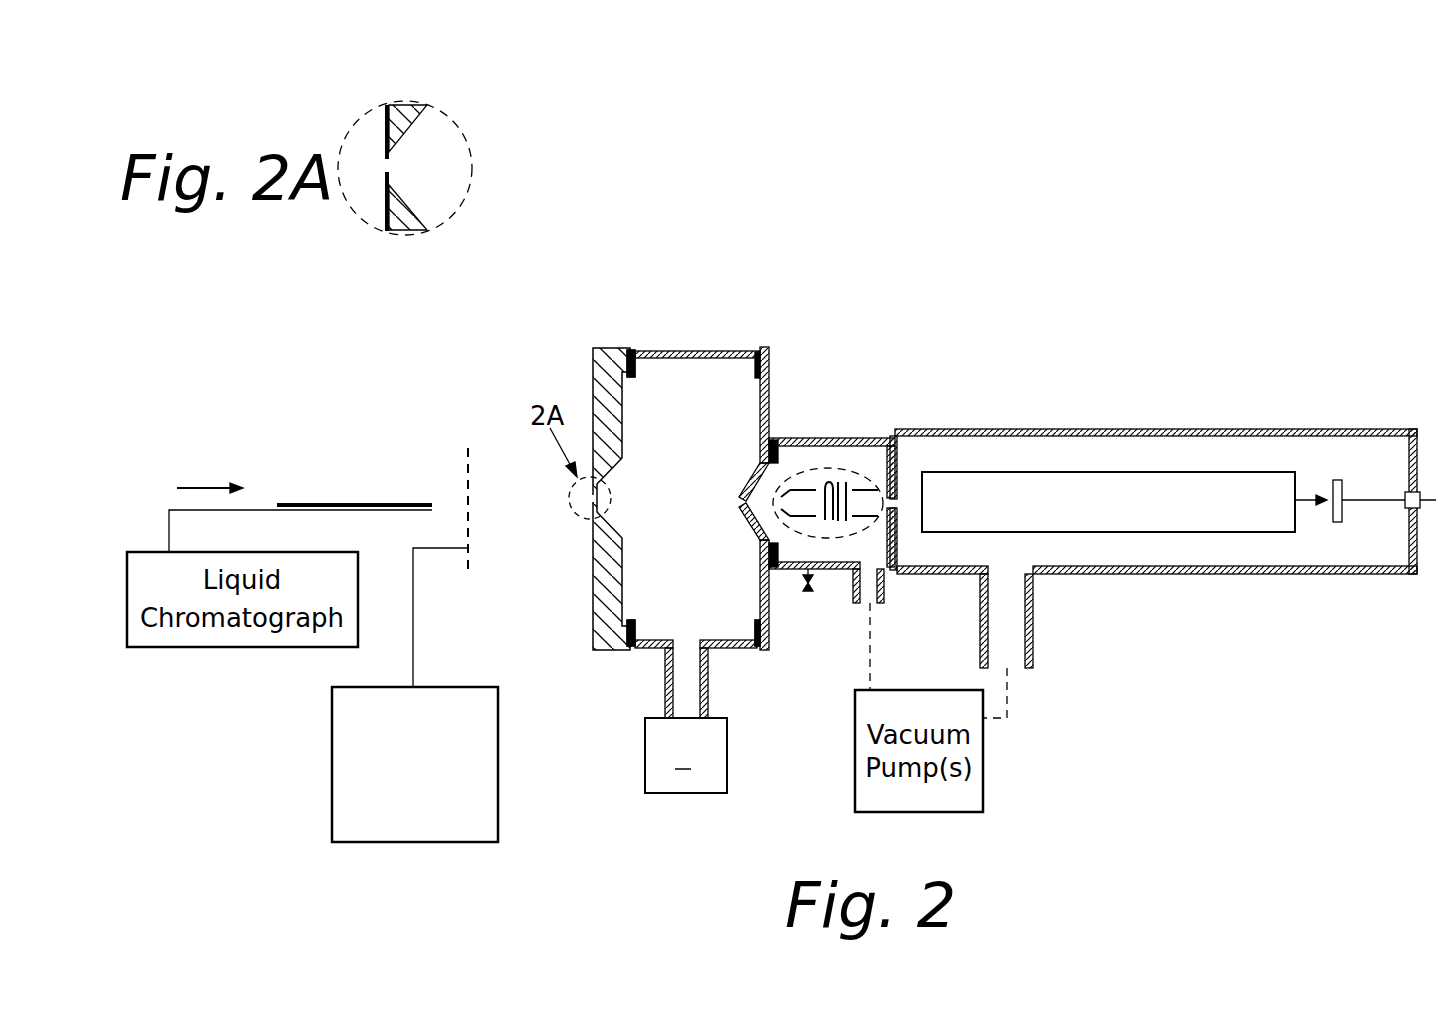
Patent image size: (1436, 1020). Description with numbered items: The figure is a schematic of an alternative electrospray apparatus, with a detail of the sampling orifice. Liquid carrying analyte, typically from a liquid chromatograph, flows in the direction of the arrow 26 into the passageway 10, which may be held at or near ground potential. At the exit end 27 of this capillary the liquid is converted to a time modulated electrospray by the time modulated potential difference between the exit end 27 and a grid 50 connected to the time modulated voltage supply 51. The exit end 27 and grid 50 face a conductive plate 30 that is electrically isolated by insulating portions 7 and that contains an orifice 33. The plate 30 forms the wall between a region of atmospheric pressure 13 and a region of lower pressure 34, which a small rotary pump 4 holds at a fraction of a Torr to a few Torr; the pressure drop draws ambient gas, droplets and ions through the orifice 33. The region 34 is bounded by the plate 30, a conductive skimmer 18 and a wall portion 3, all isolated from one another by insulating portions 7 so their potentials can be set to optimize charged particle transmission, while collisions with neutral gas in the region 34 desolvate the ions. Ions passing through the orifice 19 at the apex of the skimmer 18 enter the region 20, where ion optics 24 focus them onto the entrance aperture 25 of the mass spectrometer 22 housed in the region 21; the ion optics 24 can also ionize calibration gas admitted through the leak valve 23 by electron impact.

In FIG. 2, the wall portion 3 is at (672, 352).
In FIG. 2, the small rotary pump 4 is at (686, 755).
In FIG. 2, the insulating portions 7 is at (632, 650).
In FIG. 2, the passageway 10 is at (308, 503).
In FIG. 2, the region of atmospheric pressure 13 is at (457, 500).
In FIG. 2, the conductive skimmer 18 is at (757, 470).
In FIG. 2, the orifice 19 is at (740, 501).
In FIG. 2, the region 20 is at (788, 472).
In FIG. 2, the region 21 is at (947, 457).
In FIG. 2, the mass spectrometer 22 is at (1120, 472).
In FIG. 2, the leak valve 23 is at (808, 594).
In FIG. 2, the ion optics 24 is at (837, 468).
In FIG. 2, the entrance aperture 25 is at (917, 500).
In FIG. 2, the arrow 26 is at (202, 487).
In FIG. 2, the exit end 27 is at (437, 503).
In FIG. 2, the conductive plate 30 is at (603, 578).
In FIG. 2A, the orifice 33 is at (395, 164).
In FIG. 2, the region of lower pressure 34 is at (640, 443).
In FIG. 2, the grid 50 is at (470, 447).
In FIG. 2, the time modulated voltage supply 51 is at (332, 782).